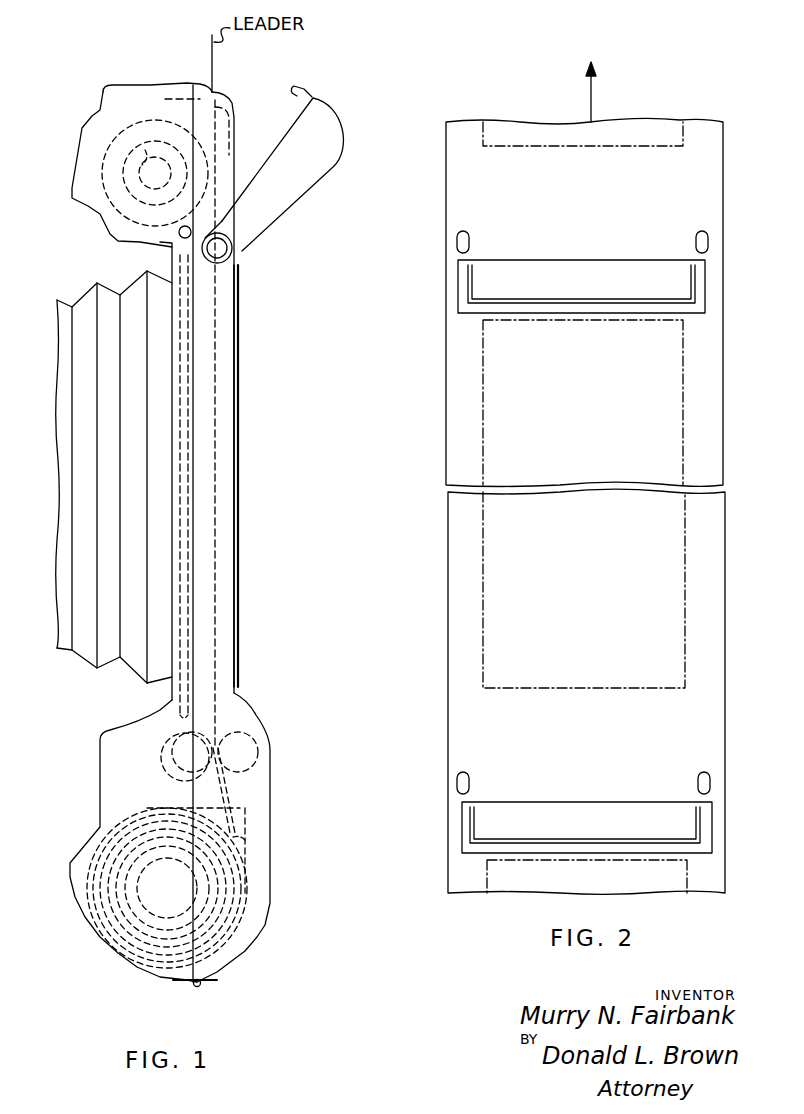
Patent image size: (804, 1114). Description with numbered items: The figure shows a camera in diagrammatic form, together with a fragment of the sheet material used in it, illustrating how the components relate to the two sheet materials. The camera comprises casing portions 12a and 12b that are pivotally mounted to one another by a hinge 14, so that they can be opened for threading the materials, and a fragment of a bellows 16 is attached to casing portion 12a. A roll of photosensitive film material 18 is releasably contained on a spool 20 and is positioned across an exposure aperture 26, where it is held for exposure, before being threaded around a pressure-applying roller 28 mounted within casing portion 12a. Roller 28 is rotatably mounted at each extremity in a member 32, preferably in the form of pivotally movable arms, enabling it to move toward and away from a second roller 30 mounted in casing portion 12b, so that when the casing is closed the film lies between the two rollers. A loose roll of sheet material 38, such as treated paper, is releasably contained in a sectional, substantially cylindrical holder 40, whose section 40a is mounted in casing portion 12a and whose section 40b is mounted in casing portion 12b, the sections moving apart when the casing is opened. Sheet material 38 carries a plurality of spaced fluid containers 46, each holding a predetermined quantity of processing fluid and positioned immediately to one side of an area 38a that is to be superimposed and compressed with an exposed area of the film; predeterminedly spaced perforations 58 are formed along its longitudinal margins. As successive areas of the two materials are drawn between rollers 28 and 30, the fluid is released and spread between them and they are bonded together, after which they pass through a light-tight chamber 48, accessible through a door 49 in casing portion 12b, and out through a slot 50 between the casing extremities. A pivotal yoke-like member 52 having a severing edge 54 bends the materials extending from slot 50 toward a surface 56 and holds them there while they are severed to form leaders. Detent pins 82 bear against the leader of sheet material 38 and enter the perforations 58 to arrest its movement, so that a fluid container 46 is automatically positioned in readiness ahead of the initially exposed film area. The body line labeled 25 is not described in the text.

In FIG. 1, the casing portion 12a is at (108, 757).
In FIG. 1, the casing portion 12b is at (268, 796).
In FIG. 1, the hinge 14 is at (197, 986).
In FIG. 1, the bellows 16 is at (78, 650).
In FIG. 1, the photosensitive film material 18 is at (172, 247).
In FIG. 1, the spool 20 is at (140, 148).
In FIG. 1, the body member 25 is at (172, 485).
In FIG. 1, the exposure aperture 26 is at (183, 620).
In FIG. 1, the roller 28 is at (215, 782).
In FIG. 1, the roller 30 is at (258, 757).
In FIG. 1, the member 32 is at (163, 722).
In FIG. 1, the sheet material 38 is at (245, 840).
In FIG. 2, the sheet material 38 is at (445, 400).
In FIG. 2, the area of the sheet material 38a is at (593, 557).
In FIG. 1, the holder 40 is at (113, 950).
In FIG. 1, the holder section 40a is at (90, 866).
In FIG. 1, the holder section 40b is at (240, 935).
In FIG. 1, the fluid container 46 is at (240, 808).
In FIG. 2, the fluid container 46 is at (590, 290).
In FIG. 1, the light-tight chamber 48 is at (228, 462).
In FIG. 1, the door 49 is at (240, 519).
In FIG. 1, the slot 50 is at (214, 90).
In FIG. 1, the yoke-like member 52 is at (344, 138).
In FIG. 1, the severing edge 54 is at (294, 86).
In FIG. 1, the surface 56 is at (178, 82).
In FIG. 2, the perforations 58 is at (467, 243).
In FIG. 1, the detent pins 82 is at (220, 785).